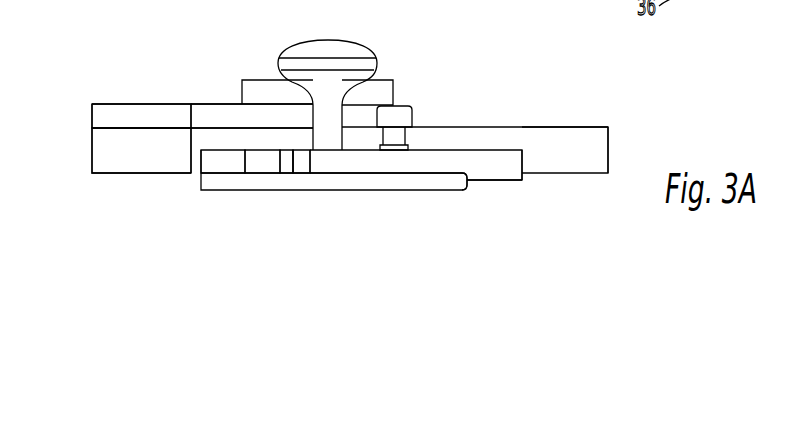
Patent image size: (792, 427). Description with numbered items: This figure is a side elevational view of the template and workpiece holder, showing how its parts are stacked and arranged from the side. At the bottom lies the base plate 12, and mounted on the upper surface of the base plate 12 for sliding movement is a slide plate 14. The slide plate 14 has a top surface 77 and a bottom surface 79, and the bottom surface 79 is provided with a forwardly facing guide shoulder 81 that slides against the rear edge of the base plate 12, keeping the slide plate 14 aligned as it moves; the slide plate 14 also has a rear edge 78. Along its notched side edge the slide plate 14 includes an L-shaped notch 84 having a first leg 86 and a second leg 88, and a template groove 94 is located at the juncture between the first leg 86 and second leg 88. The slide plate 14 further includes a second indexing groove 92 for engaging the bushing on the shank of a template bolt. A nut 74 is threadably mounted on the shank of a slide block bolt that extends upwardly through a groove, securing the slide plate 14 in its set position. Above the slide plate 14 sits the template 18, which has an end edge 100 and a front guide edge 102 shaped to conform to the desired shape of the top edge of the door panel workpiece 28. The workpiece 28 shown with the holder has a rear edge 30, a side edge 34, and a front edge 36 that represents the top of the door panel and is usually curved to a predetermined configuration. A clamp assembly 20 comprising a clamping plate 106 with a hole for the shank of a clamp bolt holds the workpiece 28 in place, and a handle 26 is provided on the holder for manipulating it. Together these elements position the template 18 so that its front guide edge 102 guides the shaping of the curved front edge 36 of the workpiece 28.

The base plate 12 is at (437, 199).
The slide plate 14 is at (506, 189).
The template 18 is at (115, 96).
The clamp assembly 20 is at (394, 72).
The handle 26 is at (353, 44).
The door panel workpiece 28 is at (617, 130).
The rear edge 30 is at (608, 162).
The side edge 34 is at (575, 142).
The front edge 36 is at (92, 154).
The nut 74 is at (410, 107).
The top surface 77 is at (500, 151).
The rear edge 78 is at (522, 168).
The bottom surface 79 is at (363, 175).
The guide shoulder 81 is at (460, 183).
The L-shaped notch 84 is at (302, 156).
The first leg 86 is at (300, 170).
The second leg 88 is at (218, 162).
The second indexing groove 92 is at (258, 163).
The template groove 94 is at (302, 170).
The end edge 100 is at (218, 117).
The front guide edge 102 is at (92, 116).
The clamping plate 106 is at (252, 80).